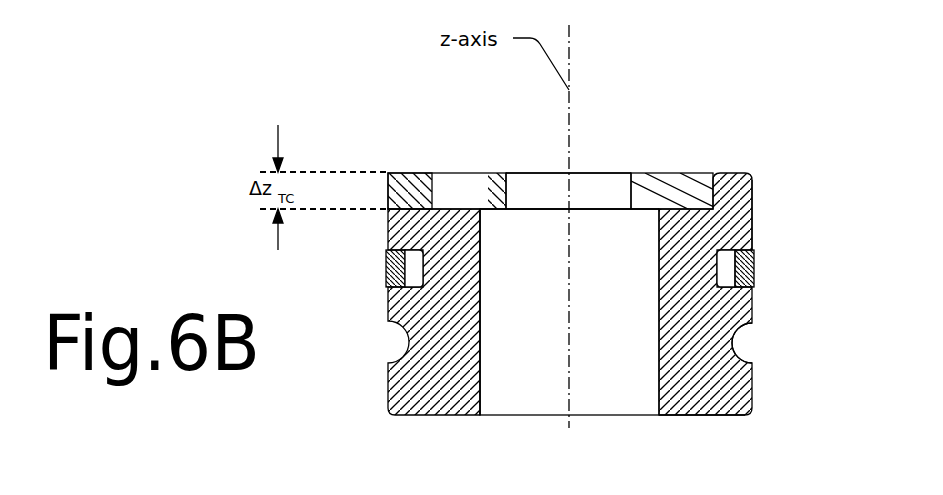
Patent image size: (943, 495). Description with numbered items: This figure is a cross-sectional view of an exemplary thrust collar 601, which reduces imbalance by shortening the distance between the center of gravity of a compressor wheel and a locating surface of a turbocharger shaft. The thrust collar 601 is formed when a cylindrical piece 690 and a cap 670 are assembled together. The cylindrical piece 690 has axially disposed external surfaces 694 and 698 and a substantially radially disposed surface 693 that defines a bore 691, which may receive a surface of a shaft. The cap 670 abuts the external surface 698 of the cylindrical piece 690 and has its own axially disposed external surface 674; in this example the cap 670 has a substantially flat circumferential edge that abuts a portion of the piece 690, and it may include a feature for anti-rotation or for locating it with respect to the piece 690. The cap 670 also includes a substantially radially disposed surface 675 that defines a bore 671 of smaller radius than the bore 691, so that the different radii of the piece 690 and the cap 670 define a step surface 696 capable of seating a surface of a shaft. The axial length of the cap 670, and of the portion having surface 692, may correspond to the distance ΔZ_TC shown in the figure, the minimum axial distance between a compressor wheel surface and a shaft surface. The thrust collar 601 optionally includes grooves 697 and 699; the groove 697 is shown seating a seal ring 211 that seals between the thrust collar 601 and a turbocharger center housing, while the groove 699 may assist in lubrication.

The thrust collar 601 is at (766, 95).
The cap 670 is at (478, 203).
The bore 671 is at (560, 203).
The axially disposed external surface 674 is at (686, 173).
The substantially radially disposed surface 675 is at (619, 173).
The surface 692 is at (736, 173).
The axially disposed external surface 698 is at (409, 208).
The cylindrical piece 690 is at (460, 399).
The bore 691 is at (632, 373).
The substantially radially disposed surface 693 is at (481, 330).
The step surface 696 is at (495, 212).
The groove 697 is at (753, 244).
The seal ring 211 is at (757, 270).
The groove 699 is at (738, 357).
The axially disposed external surface 694 is at (699, 418).